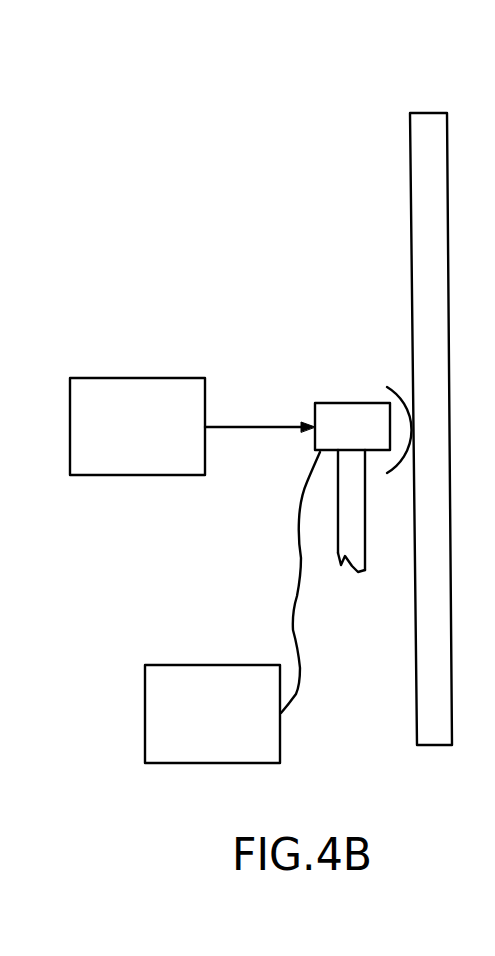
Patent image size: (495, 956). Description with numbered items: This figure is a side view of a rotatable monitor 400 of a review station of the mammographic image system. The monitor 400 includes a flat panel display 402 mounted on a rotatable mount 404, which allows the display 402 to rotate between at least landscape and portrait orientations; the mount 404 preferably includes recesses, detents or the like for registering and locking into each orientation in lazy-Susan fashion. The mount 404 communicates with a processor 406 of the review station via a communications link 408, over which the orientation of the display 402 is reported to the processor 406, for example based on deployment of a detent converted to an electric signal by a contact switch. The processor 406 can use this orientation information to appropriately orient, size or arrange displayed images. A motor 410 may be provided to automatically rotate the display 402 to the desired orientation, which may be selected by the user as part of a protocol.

The rotatable monitor 400 is at (337, 172).
The flat panel display 402 is at (433, 122).
The rotatable mount 404 is at (345, 410).
The processor 406 is at (247, 765).
The communications link 408 is at (297, 589).
The motor 410 is at (108, 386).